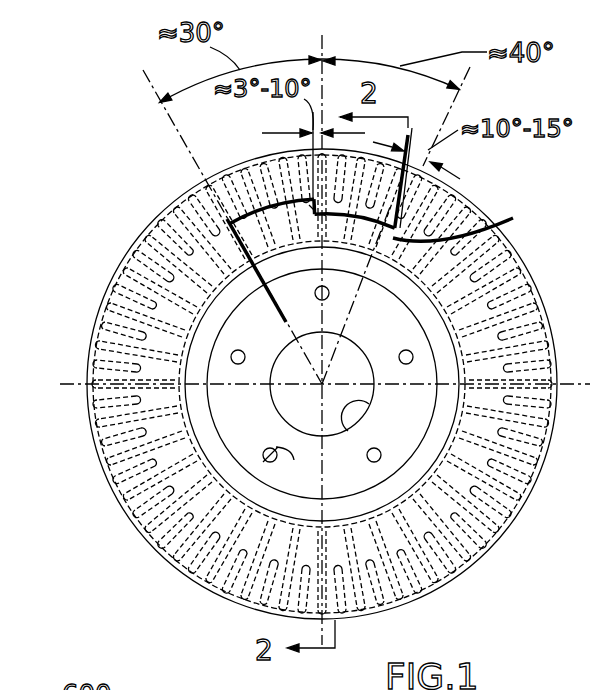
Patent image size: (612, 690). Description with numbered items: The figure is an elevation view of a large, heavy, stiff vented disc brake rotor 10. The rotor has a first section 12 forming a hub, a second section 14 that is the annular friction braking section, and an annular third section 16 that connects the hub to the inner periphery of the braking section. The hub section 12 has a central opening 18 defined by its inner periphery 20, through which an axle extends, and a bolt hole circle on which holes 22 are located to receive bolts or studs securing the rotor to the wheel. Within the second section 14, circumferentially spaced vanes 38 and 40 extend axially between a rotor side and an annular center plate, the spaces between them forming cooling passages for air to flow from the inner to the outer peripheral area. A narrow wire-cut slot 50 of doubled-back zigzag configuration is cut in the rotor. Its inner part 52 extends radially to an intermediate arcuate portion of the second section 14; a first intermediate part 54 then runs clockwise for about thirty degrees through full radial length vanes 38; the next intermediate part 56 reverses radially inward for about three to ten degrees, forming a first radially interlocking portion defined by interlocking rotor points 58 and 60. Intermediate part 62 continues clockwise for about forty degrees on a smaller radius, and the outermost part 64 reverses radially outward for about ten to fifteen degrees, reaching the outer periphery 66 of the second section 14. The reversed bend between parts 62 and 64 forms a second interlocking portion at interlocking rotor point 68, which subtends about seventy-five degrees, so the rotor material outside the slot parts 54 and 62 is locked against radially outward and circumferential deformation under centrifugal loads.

The disc brake rotor 10 is at (170, 563).
The first section 12 is at (242, 450).
The second section 14 is at (98, 457).
The third section 16 is at (197, 332).
The opening 18 is at (300, 402).
The inner periphery 20 is at (360, 405).
The holes 22 is at (370, 461).
The vanes 38 is at (107, 298).
The vanes 40 is at (123, 277).
The slot 50 is at (247, 218).
The inner part 52 is at (256, 280).
The first intermediate part 54 is at (246, 203).
The next intermediate part 56 is at (309, 208).
The interlocking rotor point 58 is at (300, 212).
The interlocking rotor point 60 is at (324, 216).
The intermediate part 62 is at (372, 250).
The outermost part 64 is at (397, 200).
The outer periphery 66 is at (288, 200).
The interlocking rotor point 68 is at (475, 225).